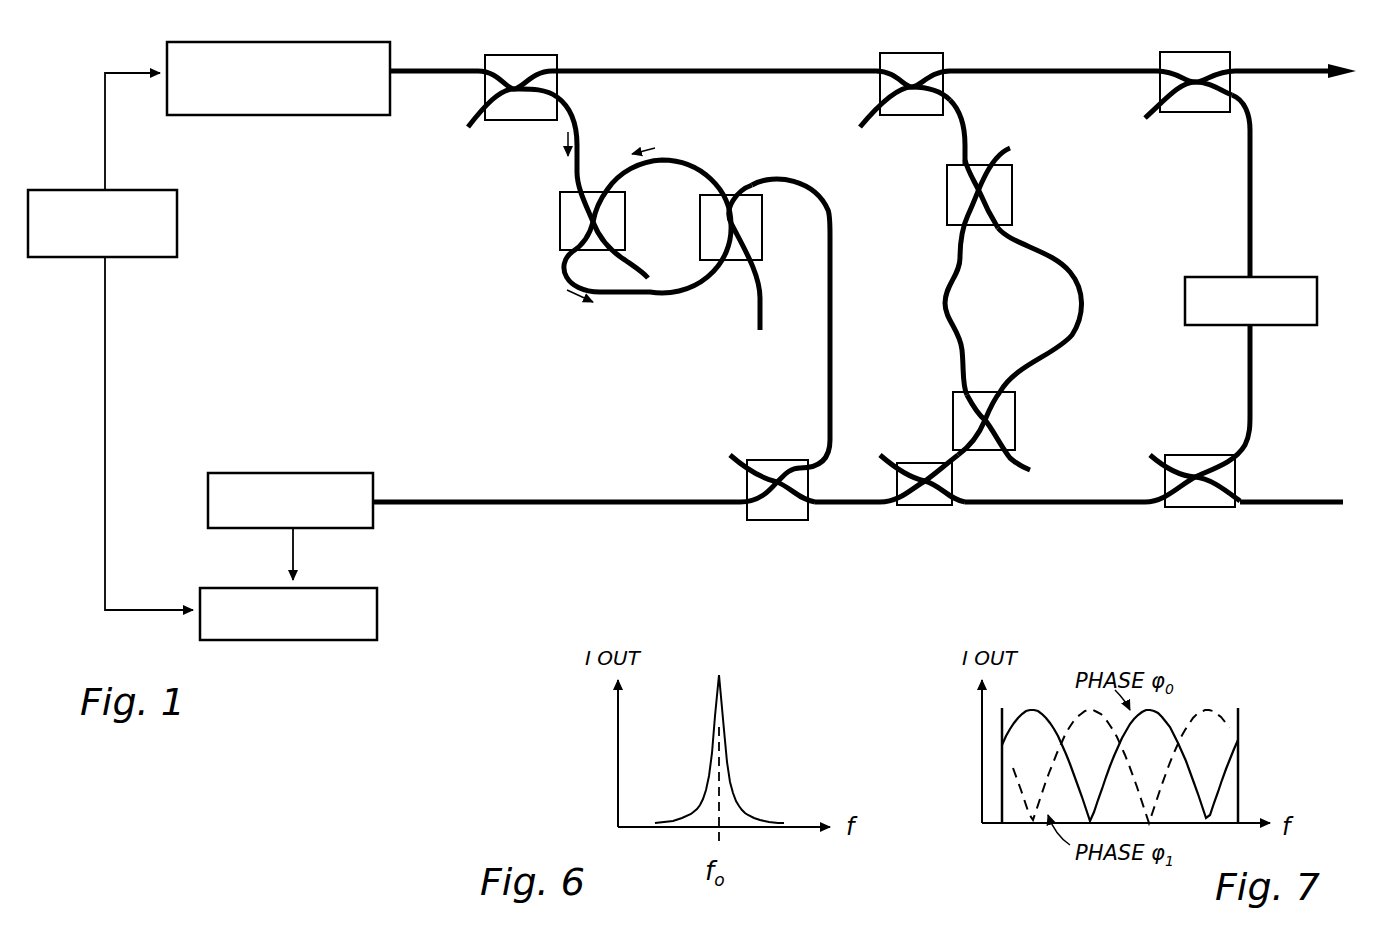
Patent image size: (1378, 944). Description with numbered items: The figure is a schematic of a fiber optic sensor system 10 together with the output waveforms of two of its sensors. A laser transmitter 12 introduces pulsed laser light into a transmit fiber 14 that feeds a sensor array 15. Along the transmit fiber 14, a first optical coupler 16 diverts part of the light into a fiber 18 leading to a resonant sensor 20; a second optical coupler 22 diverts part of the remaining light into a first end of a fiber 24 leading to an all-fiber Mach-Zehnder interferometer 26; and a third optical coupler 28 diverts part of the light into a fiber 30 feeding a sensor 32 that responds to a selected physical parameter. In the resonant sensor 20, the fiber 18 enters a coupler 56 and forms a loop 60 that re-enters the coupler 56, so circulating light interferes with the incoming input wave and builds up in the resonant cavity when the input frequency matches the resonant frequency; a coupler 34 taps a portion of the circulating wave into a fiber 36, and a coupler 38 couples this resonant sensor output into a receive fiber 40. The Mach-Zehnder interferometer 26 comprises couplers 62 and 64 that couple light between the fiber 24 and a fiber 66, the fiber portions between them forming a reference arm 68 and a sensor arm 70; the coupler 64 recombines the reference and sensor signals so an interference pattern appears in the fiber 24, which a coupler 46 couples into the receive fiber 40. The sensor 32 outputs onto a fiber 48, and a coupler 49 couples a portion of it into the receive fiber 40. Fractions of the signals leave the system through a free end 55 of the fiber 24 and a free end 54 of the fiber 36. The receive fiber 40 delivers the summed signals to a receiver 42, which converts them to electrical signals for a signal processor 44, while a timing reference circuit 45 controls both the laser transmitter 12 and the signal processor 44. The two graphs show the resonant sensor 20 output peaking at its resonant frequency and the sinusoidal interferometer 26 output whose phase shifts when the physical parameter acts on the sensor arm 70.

The sensor system 10 is at (603, 548).
The laser transmitter 12 is at (365, 115).
The transmit fiber 14 is at (432, 70).
The sensor array 15 is at (858, 535).
The first optical coupler 16 is at (515, 120).
The fiber 18 is at (580, 133).
The resonant sensor 20 is at (603, 312).
The second optical coupler 22 is at (913, 115).
The fiber 24 is at (968, 125).
The Mach-Zehnder interferometer 26 is at (1080, 268).
The third optical coupler 28 is at (1193, 112).
The fiber 30 is at (1252, 185).
The sensor 32 is at (1287, 277).
The optical coupler 34 is at (762, 222).
The fiber 36 is at (832, 300).
The optical coupler 38 is at (777, 460).
The receive fiber 40 is at (598, 502).
The receiver 42 is at (314, 473).
The signal processor 44 is at (375, 588).
The timing reference circuit 45 is at (178, 225).
The optical coupler 46 is at (928, 505).
The fiber 48 is at (1253, 384).
The coupler 49 is at (1198, 507).
The free end 54 is at (728, 466).
The free end 55 is at (890, 450).
The coupler 56 is at (560, 220).
The loop 60 is at (678, 292).
The coupler 62 is at (1013, 194).
The coupler 64 is at (1016, 420).
The fiber 66 is at (1075, 338).
The reference arm 68 is at (948, 318).
The sensor arm 70 is at (1084, 300).